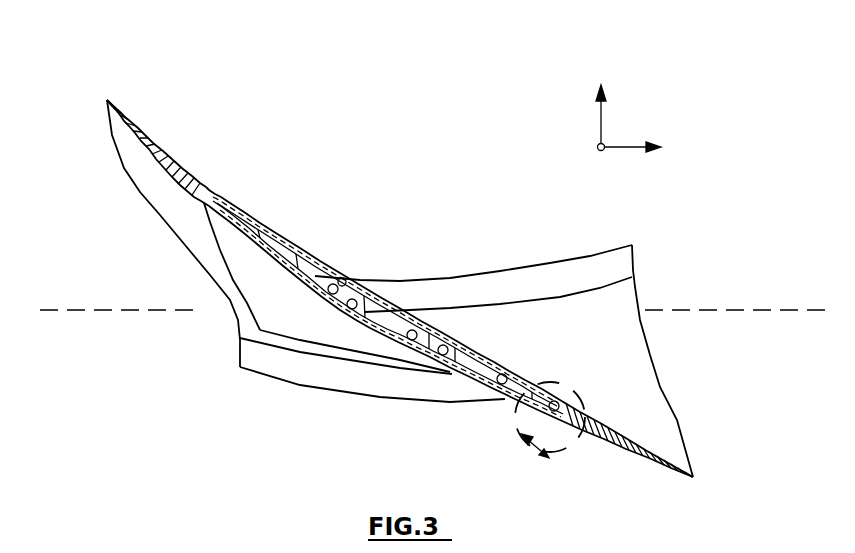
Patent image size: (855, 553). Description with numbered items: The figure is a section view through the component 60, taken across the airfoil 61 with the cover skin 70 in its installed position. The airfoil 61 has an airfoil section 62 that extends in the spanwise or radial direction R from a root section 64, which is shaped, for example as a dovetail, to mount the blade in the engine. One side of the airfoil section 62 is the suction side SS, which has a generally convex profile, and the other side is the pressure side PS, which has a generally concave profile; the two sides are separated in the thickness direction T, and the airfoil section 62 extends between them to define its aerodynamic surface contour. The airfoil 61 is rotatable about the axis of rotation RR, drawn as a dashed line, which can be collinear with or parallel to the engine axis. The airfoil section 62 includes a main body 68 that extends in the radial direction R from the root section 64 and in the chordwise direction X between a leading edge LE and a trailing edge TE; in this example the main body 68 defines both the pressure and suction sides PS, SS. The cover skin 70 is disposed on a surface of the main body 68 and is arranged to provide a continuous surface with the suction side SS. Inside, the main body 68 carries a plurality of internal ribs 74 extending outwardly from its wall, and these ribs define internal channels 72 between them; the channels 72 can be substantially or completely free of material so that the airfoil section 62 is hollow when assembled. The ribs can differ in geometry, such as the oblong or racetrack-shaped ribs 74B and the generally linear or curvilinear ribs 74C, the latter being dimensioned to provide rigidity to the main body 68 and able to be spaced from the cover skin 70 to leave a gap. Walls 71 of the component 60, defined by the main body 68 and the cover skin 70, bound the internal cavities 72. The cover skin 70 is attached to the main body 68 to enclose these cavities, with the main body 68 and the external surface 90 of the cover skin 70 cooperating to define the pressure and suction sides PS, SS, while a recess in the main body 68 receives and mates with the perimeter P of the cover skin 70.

The component 60 is at (434, 249).
The airfoil 61 is at (98, 122).
The airfoil section 62 is at (118, 188).
The root section 64 is at (224, 362).
The main body 68 is at (200, 183).
The cover skin 70 is at (215, 235).
The walls 71 is at (283, 243).
The internal channel 72 is at (300, 266).
The internal rib 74 is at (327, 300).
The internal rib 74B is at (340, 275).
The internal rib 74C is at (410, 328).
The external surface 90 is at (328, 332).
The leading edge LE is at (182, 246).
The trailing edge TE is at (677, 417).
The pressure side PS is at (267, 228).
The suction side SS is at (214, 272).
The perimeter P is at (228, 302).
The axis of rotation RR is at (763, 310).
The thickness direction T is at (601, 102).
The chordwise direction X is at (644, 149).
The radial direction R is at (600, 151).